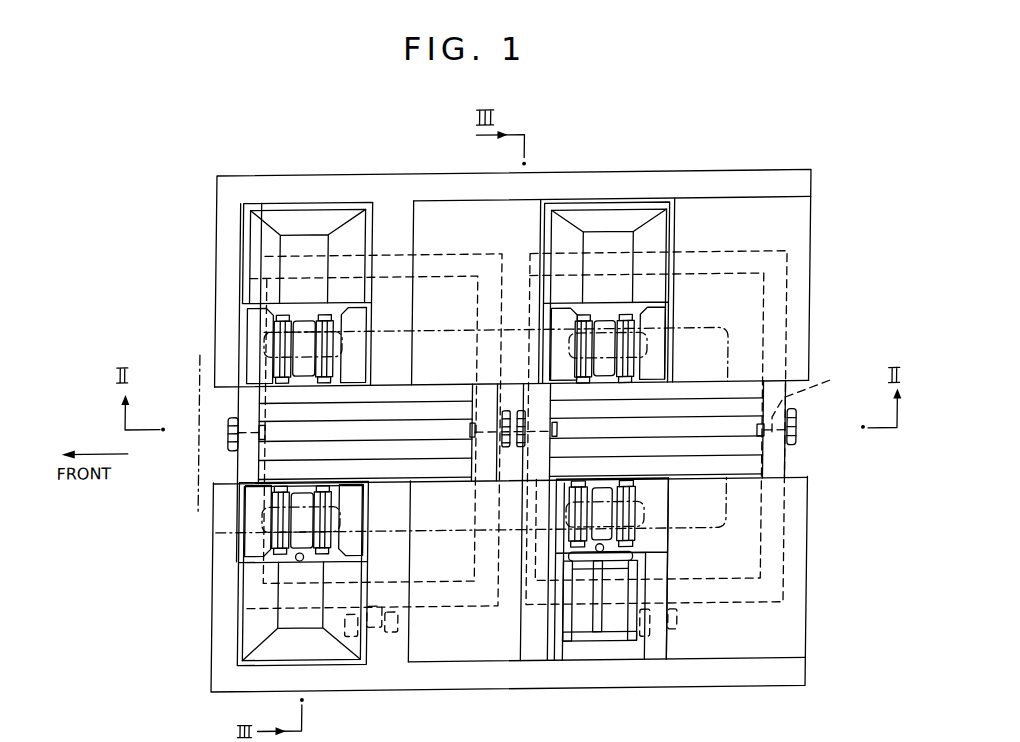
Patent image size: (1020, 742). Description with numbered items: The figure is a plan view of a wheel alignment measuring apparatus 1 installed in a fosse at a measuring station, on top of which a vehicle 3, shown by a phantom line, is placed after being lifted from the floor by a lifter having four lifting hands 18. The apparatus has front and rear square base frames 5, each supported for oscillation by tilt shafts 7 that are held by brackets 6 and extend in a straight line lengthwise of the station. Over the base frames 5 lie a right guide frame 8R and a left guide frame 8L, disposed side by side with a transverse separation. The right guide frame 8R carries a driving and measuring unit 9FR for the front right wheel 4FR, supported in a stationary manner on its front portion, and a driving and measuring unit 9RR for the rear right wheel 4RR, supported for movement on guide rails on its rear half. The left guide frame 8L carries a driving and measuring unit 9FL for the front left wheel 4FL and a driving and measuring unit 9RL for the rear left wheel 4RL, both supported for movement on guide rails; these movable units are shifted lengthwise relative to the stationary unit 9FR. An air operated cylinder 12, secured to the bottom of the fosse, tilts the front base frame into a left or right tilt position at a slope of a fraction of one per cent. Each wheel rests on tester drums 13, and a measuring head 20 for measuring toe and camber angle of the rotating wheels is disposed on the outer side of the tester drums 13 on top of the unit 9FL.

The wheel alignment measuring apparatus 1 is at (856, 230).
The vehicle 3 is at (198, 438).
The base frame 5 is at (236, 465).
The bracket 6 is at (799, 420).
The tilt shaft 7 is at (810, 399).
The right guide frame 8R is at (814, 311).
The left guide frame 8L is at (808, 622).
The driving and measuring unit for front right wheel 9FR is at (240, 283).
The driving and measuring unit for rear right wheel 9RR is at (688, 312).
The driving and measuring unit for front left wheel 9FL is at (232, 547).
The driving and measuring unit for rear left wheel 9RL is at (680, 538).
The front right wheel 4FR is at (270, 356).
The rear right wheel 4RR is at (642, 355).
The front left wheel 4FL is at (342, 497).
The rear left wheel 4RL is at (661, 510).
The air operated cylinder 12 is at (378, 642).
The tester drum 13 is at (304, 523).
The lifting hand 18 is at (308, 322).
The measuring head 20 is at (593, 664).